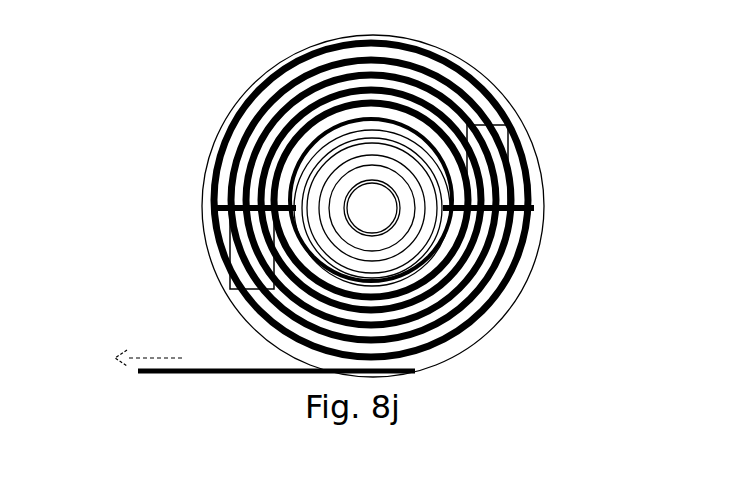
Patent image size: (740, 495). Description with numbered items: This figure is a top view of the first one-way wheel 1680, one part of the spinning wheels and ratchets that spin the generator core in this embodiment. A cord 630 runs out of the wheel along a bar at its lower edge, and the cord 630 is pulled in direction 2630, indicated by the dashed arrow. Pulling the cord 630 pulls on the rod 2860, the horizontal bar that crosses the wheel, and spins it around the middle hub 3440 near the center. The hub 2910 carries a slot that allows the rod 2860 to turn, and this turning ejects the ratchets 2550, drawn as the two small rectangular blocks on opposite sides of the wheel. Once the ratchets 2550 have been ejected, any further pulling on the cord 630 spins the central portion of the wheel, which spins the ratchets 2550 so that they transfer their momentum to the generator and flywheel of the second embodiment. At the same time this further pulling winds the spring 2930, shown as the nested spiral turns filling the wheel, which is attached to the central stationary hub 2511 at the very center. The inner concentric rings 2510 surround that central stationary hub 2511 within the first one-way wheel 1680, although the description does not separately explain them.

The cord 630 is at (218, 374).
The first one-way wheel 1680 is at (252, 96).
The inner coil turns 2510 is at (278, 168).
The central stationary hub 2511 is at (363, 183).
The ratchets 2550 is at (231, 289).
The pulling direction 2630 is at (122, 355).
The rod 2860 is at (213, 208).
The hub 2910 is at (445, 298).
The spring 2930 is at (378, 152).
The middle hub 3440 is at (432, 274).